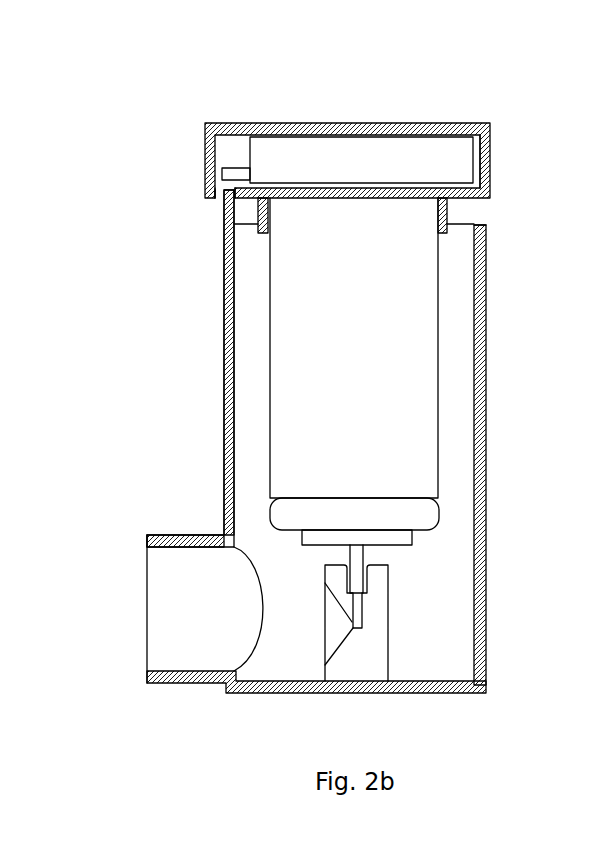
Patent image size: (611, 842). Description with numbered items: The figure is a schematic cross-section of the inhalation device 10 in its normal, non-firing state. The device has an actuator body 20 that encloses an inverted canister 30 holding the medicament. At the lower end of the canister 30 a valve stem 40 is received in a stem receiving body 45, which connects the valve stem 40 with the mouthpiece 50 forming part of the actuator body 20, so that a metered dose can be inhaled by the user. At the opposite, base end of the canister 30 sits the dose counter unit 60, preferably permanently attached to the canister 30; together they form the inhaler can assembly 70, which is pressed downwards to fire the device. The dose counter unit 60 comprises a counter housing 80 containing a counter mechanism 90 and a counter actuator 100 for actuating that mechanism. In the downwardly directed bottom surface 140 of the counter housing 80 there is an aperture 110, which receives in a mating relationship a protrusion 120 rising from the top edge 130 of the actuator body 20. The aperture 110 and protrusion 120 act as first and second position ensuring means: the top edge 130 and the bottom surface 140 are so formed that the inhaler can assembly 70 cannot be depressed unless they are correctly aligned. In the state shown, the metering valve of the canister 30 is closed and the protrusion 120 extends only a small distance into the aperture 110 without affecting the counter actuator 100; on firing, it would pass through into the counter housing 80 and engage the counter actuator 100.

The inhalation device 10 is at (122, 86).
The actuator body 20 is at (532, 668).
The canister 30 is at (428, 327).
The valve stem 40 is at (360, 560).
The stem receiving body 45 is at (378, 638).
The mouthpiece 50 is at (158, 620).
The dose counter unit 60 is at (255, 123).
The inhaler can assembly 70 is at (347, 176).
The counter housing 80 is at (492, 162).
The counter mechanism 90 is at (308, 152).
The counter actuator 100 is at (240, 168).
The aperture 110 is at (213, 181).
The protrusion 120 is at (222, 200).
The top edge 130 is at (478, 224).
The bottom surface 140 is at (215, 198).